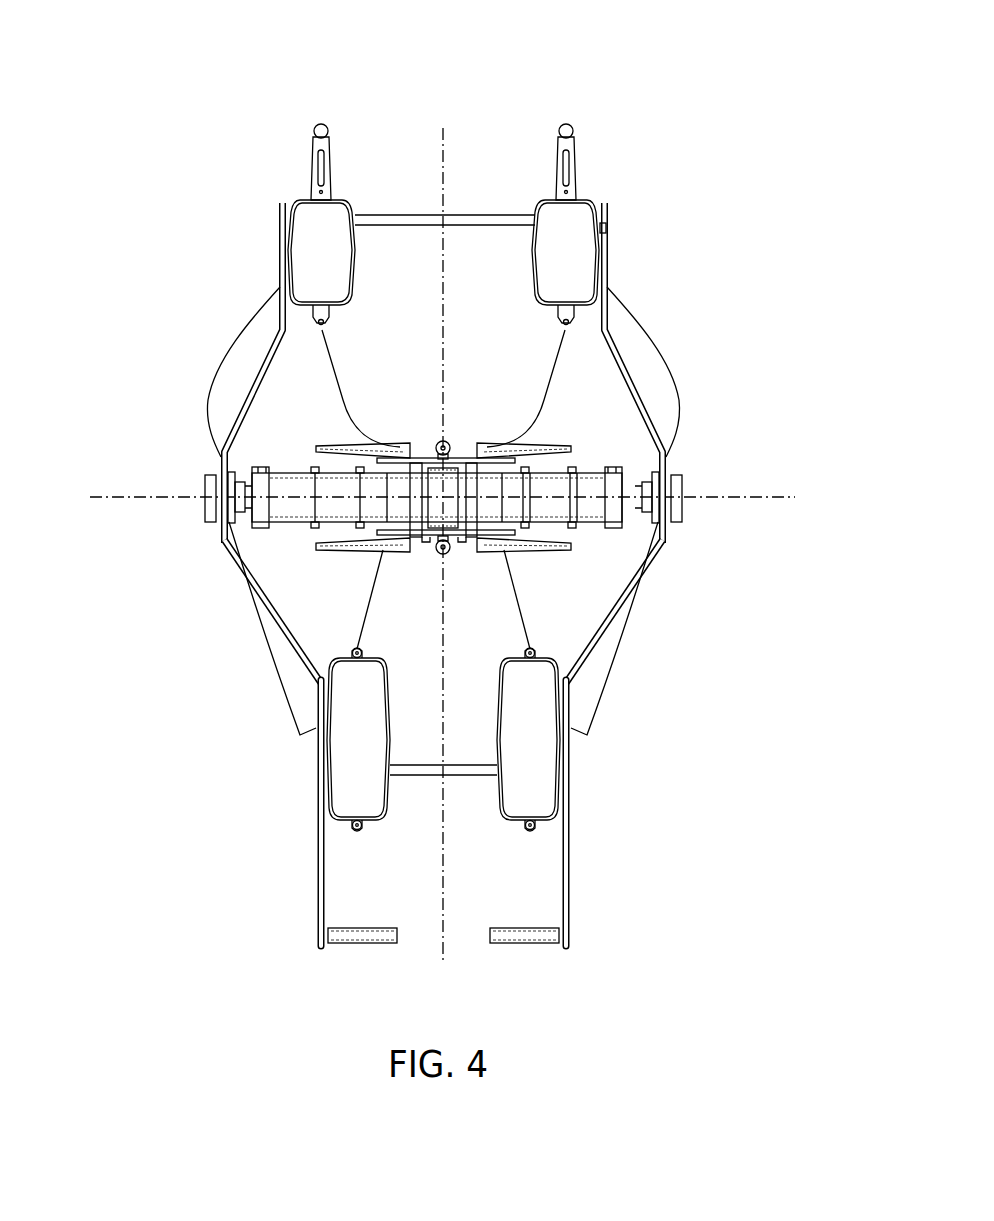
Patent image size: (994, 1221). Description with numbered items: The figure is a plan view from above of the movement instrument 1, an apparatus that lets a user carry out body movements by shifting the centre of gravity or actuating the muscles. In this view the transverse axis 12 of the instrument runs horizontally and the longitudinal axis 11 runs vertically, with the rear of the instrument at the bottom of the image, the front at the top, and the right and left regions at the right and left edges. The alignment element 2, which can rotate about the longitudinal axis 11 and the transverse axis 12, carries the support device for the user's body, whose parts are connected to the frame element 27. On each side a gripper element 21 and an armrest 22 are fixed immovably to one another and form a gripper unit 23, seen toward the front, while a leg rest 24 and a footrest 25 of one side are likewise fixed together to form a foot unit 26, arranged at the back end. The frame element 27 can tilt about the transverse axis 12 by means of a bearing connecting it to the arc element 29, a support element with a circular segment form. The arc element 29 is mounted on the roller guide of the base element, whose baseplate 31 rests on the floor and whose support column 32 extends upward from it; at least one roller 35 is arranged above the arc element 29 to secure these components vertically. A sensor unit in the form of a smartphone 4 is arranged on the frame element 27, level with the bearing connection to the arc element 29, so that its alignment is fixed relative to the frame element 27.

The movement instrument 1 is at (132, 187).
The alignment element 2 is at (377, 140).
The longitudinal axis 11 is at (443, 143).
The transverse axis 12 is at (172, 495).
The gripper element 21 is at (572, 130).
The armrest 22 is at (575, 236).
The gripper unit 23 is at (637, 37).
The leg rest 24 is at (540, 767).
The footrest 25 is at (522, 933).
The foot unit 26 is at (724, 720).
The frame element 27 is at (262, 360).
The arc element 29 is at (438, 488).
The baseplate 31 is at (316, 727).
The support column 32 is at (302, 698).
The roller 35 is at (315, 547).
The smartphone 4 is at (208, 500).